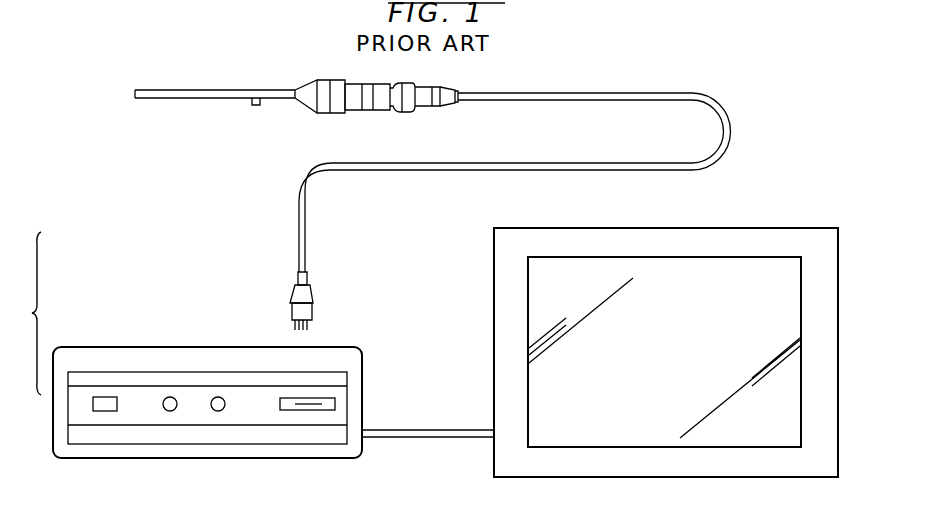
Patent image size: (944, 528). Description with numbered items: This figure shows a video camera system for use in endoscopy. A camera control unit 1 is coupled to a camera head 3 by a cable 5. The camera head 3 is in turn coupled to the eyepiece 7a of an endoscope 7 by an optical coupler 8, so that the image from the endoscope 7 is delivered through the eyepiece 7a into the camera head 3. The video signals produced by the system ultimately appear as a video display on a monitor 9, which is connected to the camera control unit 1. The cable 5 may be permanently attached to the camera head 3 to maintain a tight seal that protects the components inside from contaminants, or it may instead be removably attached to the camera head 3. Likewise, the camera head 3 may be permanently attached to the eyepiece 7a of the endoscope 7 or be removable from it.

The camera control unit 1 is at (162, 344).
The camera head 3 is at (446, 102).
The cable 5 is at (694, 93).
The endoscope 7 is at (190, 90).
The eyepiece 7a is at (320, 80).
The optical coupler 8 is at (380, 100).
The monitor 9 is at (800, 200).